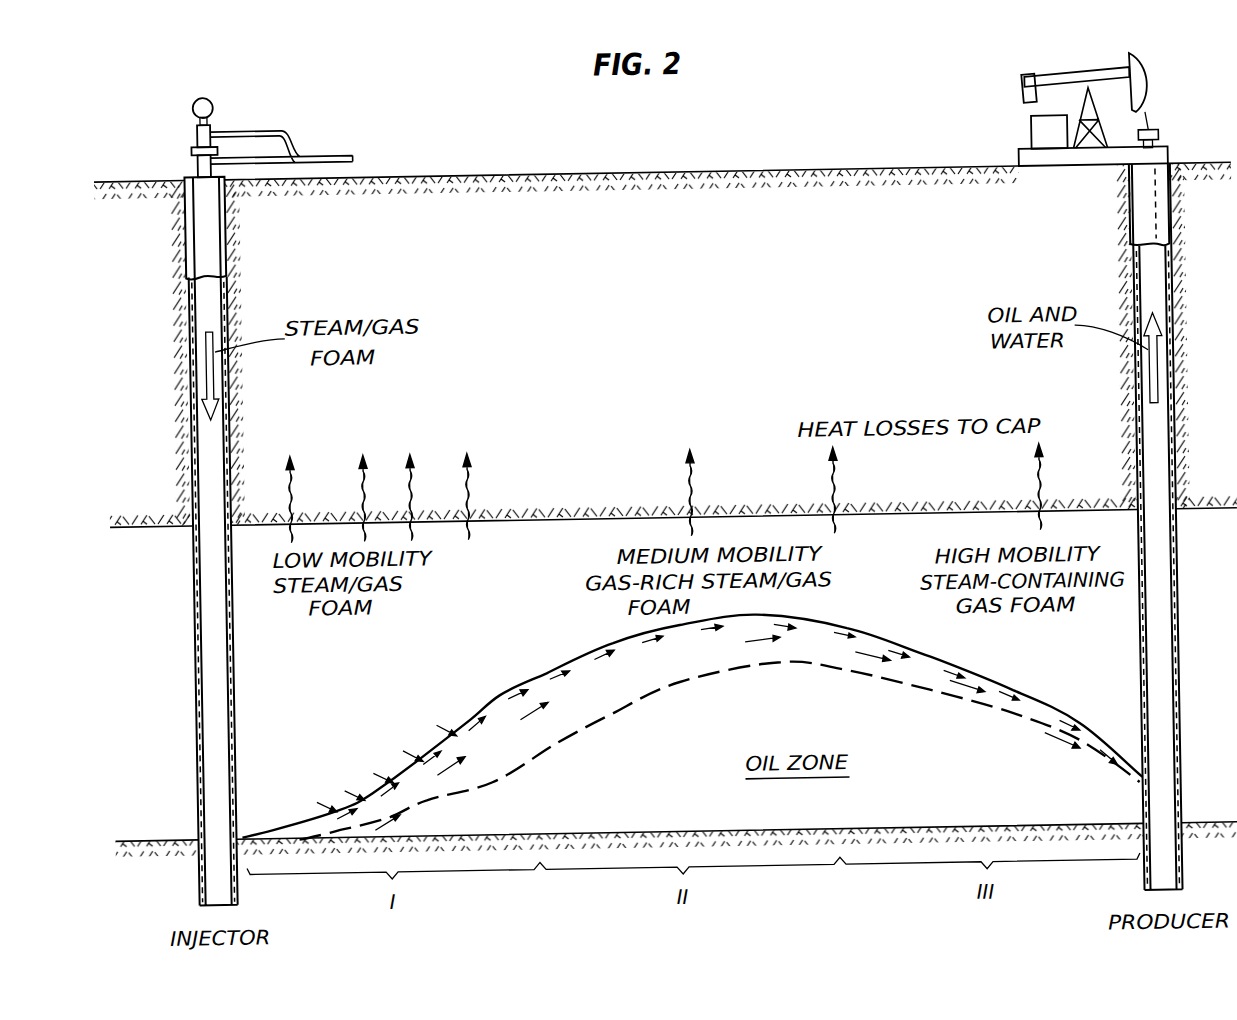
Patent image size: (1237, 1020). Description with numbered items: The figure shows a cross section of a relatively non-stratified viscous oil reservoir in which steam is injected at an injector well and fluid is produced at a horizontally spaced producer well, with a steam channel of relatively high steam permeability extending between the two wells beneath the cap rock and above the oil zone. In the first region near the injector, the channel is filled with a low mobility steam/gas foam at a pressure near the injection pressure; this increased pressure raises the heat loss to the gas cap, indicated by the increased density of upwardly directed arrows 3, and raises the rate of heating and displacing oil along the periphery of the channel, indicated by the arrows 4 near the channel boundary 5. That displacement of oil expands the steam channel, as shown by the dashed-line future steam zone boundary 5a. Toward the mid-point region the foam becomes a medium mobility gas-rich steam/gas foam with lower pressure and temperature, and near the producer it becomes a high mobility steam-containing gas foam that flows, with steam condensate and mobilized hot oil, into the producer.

The upwardly directed arrows 3 is at (407, 476).
The arrows near the channel boundary 4 is at (418, 752).
The channel boundary 5 is at (496, 700).
The dashed-line future steam zone boundary 5a is at (571, 742).